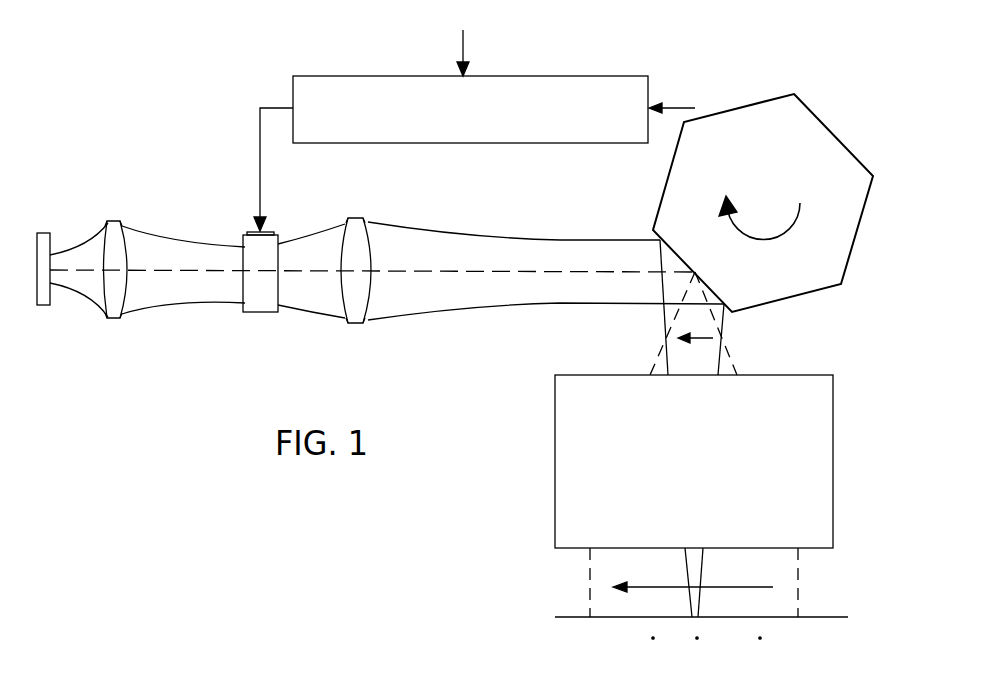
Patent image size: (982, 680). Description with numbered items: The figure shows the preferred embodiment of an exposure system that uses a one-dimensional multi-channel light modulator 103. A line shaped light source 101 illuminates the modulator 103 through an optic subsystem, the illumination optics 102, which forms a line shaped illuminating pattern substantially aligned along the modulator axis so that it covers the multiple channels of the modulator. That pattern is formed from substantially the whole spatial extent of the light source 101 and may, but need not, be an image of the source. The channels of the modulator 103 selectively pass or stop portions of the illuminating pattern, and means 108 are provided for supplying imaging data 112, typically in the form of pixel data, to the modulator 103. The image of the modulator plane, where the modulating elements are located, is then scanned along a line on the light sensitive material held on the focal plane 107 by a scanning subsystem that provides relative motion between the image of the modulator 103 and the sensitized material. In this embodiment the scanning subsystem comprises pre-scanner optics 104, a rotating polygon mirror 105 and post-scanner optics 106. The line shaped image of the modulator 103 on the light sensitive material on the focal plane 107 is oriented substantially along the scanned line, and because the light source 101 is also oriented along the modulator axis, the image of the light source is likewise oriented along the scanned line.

The light source 101 is at (42, 306).
The illumination optics 102 is at (110, 221).
The multi-channel light modulator 103 is at (262, 313).
The pre-scanner optics 104 is at (354, 218).
The rotating polygon mirror 105 is at (737, 107).
The post-scanner optics 106 is at (555, 400).
The focal plane 107 is at (570, 617).
The means for supplying imaging data 108 is at (306, 74).
The imaging data 112 is at (468, 48).